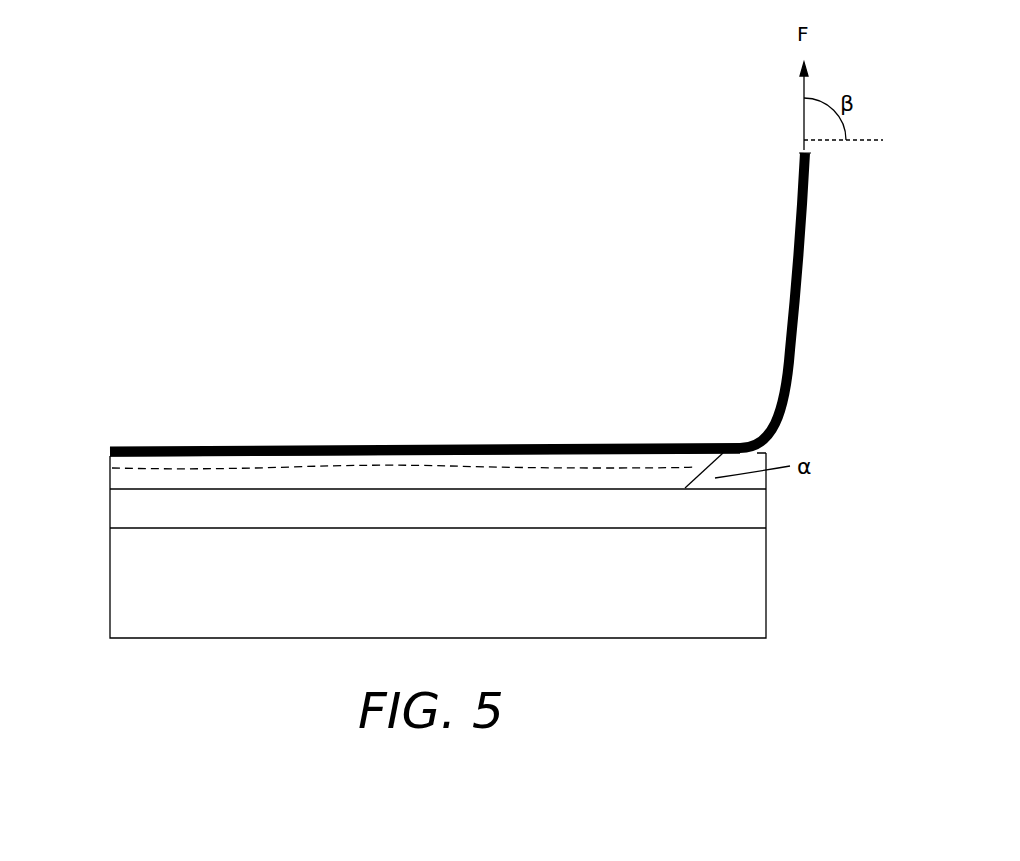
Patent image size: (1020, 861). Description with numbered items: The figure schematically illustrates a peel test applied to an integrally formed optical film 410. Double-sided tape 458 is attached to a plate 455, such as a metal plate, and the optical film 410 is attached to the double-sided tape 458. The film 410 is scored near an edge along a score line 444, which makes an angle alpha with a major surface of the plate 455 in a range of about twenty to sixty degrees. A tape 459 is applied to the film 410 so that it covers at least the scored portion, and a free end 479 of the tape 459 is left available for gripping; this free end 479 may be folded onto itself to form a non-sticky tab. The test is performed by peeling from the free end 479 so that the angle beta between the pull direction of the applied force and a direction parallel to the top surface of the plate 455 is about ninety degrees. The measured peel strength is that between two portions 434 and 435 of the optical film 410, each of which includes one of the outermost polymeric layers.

The optical film 410 is at (117, 463).
The portion of the optical film 434 is at (247, 462).
The portion of the optical film 435 is at (381, 477).
The score line 444 is at (718, 488).
The plate 455 is at (128, 588).
The double-sided tape 458 is at (128, 510).
The tape 459 is at (795, 265).
The free end of the tape 479 is at (810, 192).